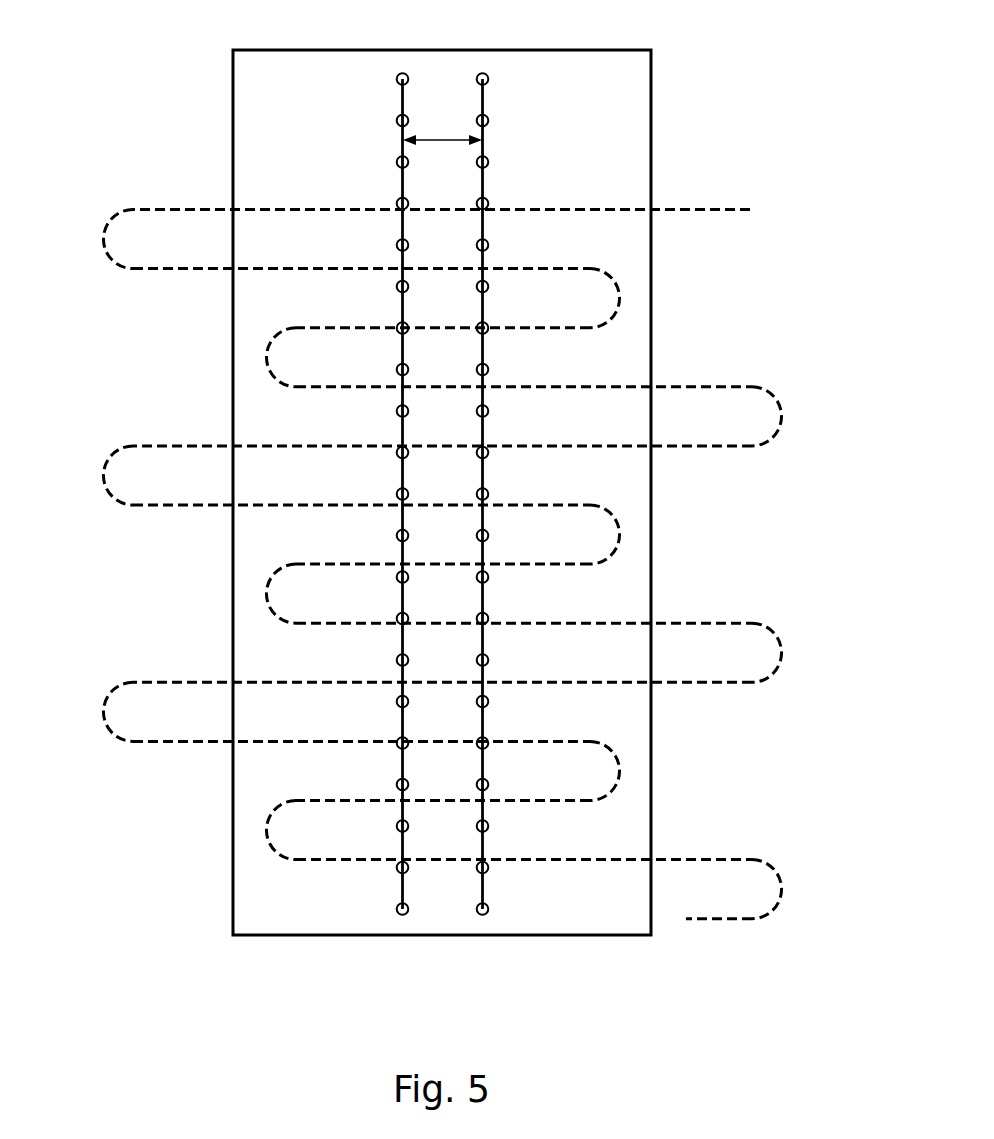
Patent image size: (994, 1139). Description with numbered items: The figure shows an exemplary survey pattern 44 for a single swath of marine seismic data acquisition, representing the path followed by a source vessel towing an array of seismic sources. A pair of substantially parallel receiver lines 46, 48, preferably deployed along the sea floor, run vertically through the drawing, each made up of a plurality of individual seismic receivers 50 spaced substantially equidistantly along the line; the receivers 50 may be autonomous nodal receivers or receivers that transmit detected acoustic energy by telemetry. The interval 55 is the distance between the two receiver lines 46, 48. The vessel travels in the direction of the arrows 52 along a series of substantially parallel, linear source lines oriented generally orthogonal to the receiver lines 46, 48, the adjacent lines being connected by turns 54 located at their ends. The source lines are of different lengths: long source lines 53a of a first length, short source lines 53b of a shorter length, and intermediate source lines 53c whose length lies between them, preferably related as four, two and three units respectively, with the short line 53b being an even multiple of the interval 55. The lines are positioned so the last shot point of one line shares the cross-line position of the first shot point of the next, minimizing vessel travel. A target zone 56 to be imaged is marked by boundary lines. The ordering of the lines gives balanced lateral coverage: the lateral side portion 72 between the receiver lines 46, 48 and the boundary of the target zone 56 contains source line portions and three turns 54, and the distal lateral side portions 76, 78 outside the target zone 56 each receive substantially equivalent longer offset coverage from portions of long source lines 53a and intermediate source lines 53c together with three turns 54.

The survey pattern 44 is at (616, 190).
The receiver line 46 is at (398, 177).
The receiver line 48 is at (490, 178).
The seismic receiver 50 is at (487, 118).
The arrow 52 is at (443, 541).
The long source line 53a is at (345, 208).
The short source line 53b is at (495, 326).
The intermediate source line 53c is at (280, 267).
The turn 54 is at (108, 220).
The interval 55 is at (437, 138).
The target zone 56 is at (603, 49).
The lateral side portion 72 is at (280, 312).
The distal lateral side portion 76 is at (170, 360).
The distal lateral side portion 78 is at (715, 332).